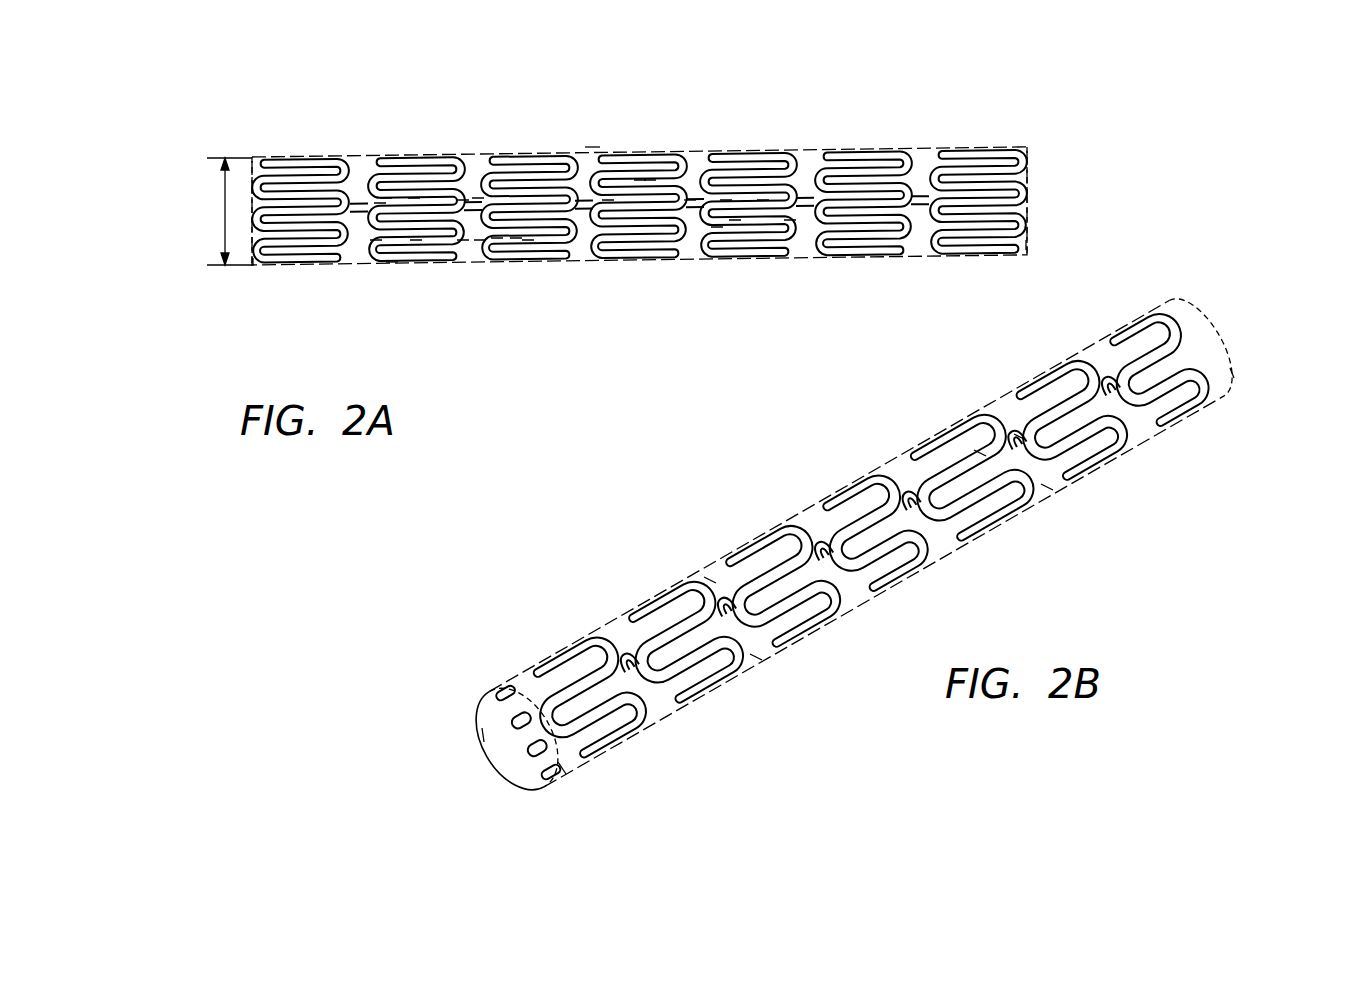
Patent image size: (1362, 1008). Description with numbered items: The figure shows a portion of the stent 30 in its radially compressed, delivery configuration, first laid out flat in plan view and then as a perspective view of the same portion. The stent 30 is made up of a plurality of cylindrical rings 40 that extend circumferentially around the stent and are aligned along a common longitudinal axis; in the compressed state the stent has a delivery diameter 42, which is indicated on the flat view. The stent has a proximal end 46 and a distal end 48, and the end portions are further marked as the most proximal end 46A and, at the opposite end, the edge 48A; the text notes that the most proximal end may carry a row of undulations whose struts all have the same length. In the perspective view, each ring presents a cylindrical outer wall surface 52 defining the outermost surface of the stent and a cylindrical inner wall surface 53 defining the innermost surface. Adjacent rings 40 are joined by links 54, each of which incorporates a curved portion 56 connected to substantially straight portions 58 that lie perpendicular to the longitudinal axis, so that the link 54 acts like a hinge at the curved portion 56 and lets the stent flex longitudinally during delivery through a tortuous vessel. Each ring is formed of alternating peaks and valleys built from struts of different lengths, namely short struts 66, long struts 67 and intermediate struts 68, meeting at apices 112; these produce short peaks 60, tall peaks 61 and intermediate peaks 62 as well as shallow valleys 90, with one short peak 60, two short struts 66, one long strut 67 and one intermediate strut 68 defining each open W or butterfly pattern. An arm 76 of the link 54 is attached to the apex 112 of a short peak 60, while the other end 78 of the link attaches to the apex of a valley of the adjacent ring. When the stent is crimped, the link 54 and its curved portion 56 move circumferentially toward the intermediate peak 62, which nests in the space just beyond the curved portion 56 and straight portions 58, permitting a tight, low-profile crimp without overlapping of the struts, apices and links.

In FIG. 2A, the stent 30 is at (683, 118).
In FIG. 2A, the cylindrical rings 40 is at (465, 323).
In FIG. 2B, the cylindrical rings 40 is at (805, 655).
In FIG. 2A, the delivery diameter 42 is at (218, 212).
In FIG. 2A, the proximal end 46 is at (1035, 118).
In FIG. 2B, the proximal end 46 is at (1222, 292).
In FIG. 2A, the most proximal end 46A is at (1028, 243).
In FIG. 2B, the most proximal end 46A is at (1234, 375).
In FIG. 2A, the distal end 48 is at (248, 132).
In FIG. 2B, the distal end 48 is at (462, 690).
In FIG. 2A, the first end edge 48A is at (253, 267).
In FIG. 2B, the first end edge 48A is at (563, 770).
In FIG. 2A, the cylindrical outer wall surface 52 is at (592, 146).
In FIG. 2B, the cylindrical inner wall surface 53 is at (482, 735).
In FIG. 2B, the links 54 is at (756, 657).
In FIG. 2A, the curved portion 56 is at (463, 200).
In FIG. 2B, the curved portion 56 is at (1020, 437).
In FIG. 2A, the straight portions 58 is at (414, 198).
In FIG. 2B, the straight portions 58 is at (1047, 487).
In FIG. 2A, the short peaks 60 is at (640, 180).
In FIG. 2A, the tall peaks 61 is at (690, 200).
In FIG. 2A, the intermediate peaks 62 is at (386, 198).
In FIG. 2B, the intermediate peaks 62 is at (980, 453).
In FIG. 2A, the short struts 66 is at (392, 262).
In FIG. 2A, the long struts 67 is at (528, 240).
In FIG. 2A, the intermediate struts 68 is at (380, 203).
In FIG. 2A, the arm 76 is at (416, 240).
In FIG. 2A, the other end of the link 78 is at (480, 240).
In FIG. 2A, the shallow valleys 90 is at (376, 240).
In FIG. 2A, the apices 112 is at (463, 240).